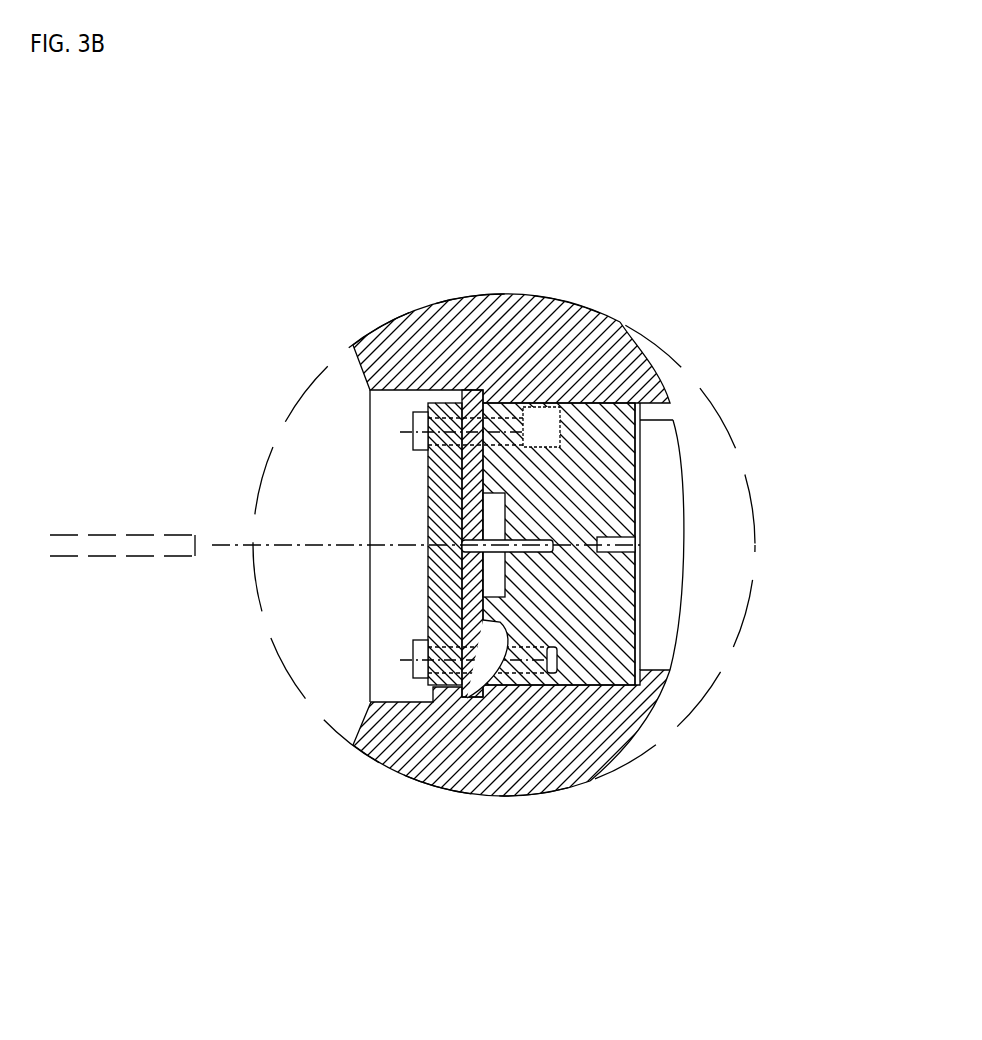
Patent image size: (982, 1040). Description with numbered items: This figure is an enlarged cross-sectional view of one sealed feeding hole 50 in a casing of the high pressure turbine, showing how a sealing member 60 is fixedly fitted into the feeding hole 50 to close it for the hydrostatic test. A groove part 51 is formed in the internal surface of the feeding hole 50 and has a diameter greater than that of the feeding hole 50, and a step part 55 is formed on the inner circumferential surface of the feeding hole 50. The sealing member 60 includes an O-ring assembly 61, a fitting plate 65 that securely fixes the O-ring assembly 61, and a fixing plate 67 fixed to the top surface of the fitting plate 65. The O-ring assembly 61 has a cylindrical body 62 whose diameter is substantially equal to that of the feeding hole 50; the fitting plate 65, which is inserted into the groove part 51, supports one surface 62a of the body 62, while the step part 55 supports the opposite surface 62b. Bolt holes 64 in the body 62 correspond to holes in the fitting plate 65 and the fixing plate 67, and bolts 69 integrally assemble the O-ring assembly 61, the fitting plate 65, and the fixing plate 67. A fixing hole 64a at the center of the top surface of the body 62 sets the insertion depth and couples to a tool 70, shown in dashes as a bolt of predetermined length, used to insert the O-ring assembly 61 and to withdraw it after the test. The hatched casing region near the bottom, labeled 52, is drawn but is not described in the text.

The feeding hole 50 is at (668, 663).
The groove part 51 is at (428, 663).
The lower housing body 52 is at (577, 743).
The step part 55 is at (668, 415).
The sealing member 60 is at (404, 507).
The O-ring assembly 61 is at (613, 468).
The body 62 is at (657, 702).
The one surface of the body 62a is at (512, 660).
The opposite surface of the body 62b is at (614, 610).
The bolt holes 64 is at (527, 403).
The fixing hole 64a is at (512, 548).
The fitting plate 65 is at (460, 609).
The fixing plate 67 is at (420, 476).
The bolts 69 is at (410, 422).
The tool 70 is at (140, 558).